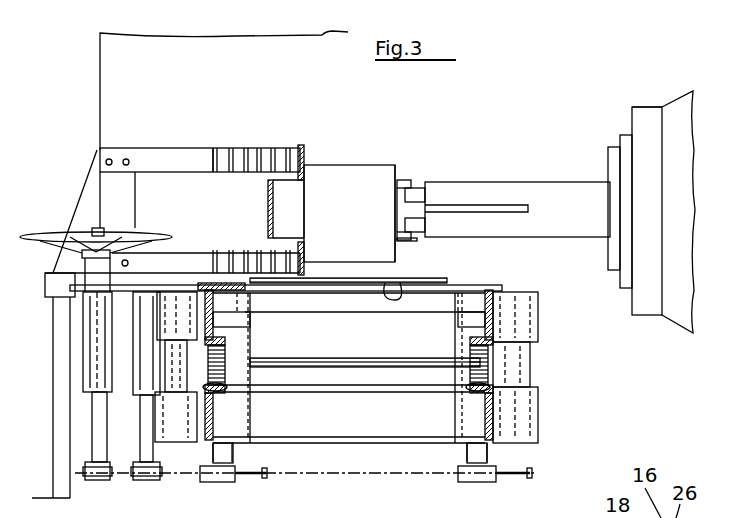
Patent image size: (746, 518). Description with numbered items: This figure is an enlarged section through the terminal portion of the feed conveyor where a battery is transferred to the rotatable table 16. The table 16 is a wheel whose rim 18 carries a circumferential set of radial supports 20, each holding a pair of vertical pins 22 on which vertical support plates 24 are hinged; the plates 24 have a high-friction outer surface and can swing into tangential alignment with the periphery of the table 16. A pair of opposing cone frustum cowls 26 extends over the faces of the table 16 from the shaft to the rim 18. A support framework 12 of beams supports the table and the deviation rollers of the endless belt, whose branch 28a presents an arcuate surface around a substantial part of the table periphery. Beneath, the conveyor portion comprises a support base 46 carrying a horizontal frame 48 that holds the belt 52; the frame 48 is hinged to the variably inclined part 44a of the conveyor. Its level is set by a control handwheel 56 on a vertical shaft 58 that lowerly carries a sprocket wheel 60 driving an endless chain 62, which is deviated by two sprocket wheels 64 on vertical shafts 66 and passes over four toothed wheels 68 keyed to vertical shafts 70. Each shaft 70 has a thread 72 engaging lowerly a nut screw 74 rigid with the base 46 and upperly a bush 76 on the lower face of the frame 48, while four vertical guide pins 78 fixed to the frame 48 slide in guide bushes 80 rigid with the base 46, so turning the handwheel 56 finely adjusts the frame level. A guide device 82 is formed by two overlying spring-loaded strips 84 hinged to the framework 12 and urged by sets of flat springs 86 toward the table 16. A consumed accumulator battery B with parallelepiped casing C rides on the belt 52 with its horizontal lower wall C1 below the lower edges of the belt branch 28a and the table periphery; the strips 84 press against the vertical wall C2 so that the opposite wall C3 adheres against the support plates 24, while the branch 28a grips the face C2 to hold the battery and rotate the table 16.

The support framework 12 is at (108, 182).
The rotatable table 16 is at (672, 97).
The rim 18 is at (642, 102).
The radial support 20 is at (527, 183).
The vertical pin 22 is at (418, 196).
The support plate 24 is at (403, 180).
The cone frustum cowl 26 is at (678, 318).
The branch of the endless belt 28a is at (266, 212).
The part of variable inclination of the feed conveyor 44a is at (537, 358).
The support base 46 is at (335, 437).
The horizontal frame 48 is at (492, 300).
The belt 52 is at (448, 282).
The control handwheel 56 is at (60, 237).
The vertical shaft 58 is at (92, 412).
The sprocket wheel 60 is at (92, 480).
The endless chain 62 is at (125, 476).
The sprocket wheel 64 is at (152, 480).
The vertical shaft 66 is at (147, 414).
The toothed wheel 68 is at (260, 484).
The vertical shaft 70 is at (232, 452).
The thread 72 is at (226, 365).
The nut screw 74 is at (490, 386).
The bush 76 is at (232, 322).
The vertical guide pin 78 is at (174, 368).
The guide bush 80 is at (188, 436).
The guide device 82 is at (218, 147).
The spring-loaded strip 84 is at (303, 146).
The flat spring 86 is at (213, 152).
The accumulator battery B is at (380, 163).
The casing C is at (332, 163).
The lower wall C1 is at (396, 283).
The vertical wall C2 is at (296, 180).
The vertical wall C3 is at (410, 243).